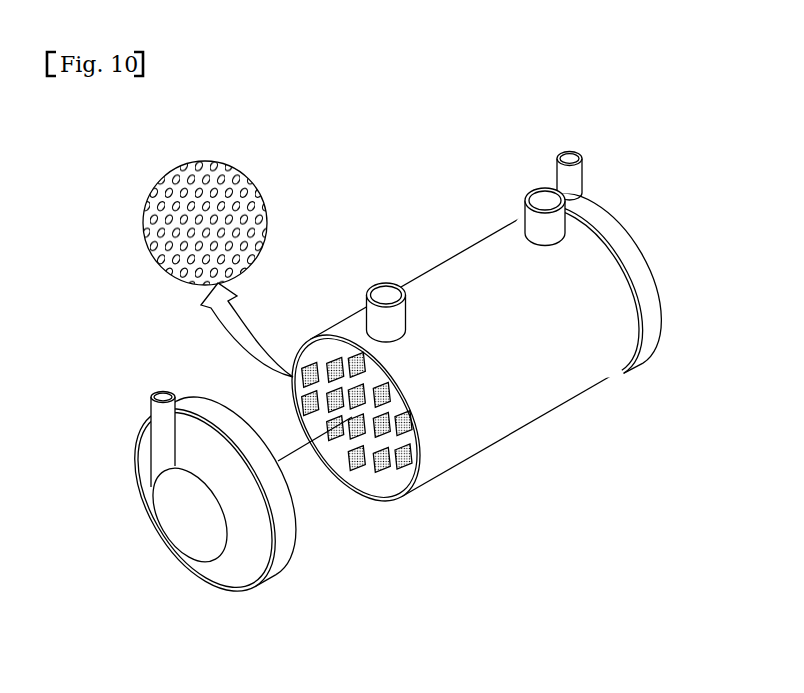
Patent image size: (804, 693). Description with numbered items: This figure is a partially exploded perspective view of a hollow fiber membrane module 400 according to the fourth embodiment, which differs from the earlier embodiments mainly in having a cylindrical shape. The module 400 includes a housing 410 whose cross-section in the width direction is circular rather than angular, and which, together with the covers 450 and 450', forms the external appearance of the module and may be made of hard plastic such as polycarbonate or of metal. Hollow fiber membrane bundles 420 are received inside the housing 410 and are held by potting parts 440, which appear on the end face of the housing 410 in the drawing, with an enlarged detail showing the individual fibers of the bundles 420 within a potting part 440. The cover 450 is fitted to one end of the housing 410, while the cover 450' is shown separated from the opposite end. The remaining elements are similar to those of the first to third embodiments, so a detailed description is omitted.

The hollow fiber membrane module 400 is at (417, 369).
The housing 410 is at (460, 250).
The hollow fiber membrane bundles 420 is at (245, 188).
The potting parts 440 is at (213, 166).
The cover 450 is at (613, 279).
The cover 450' is at (216, 501).